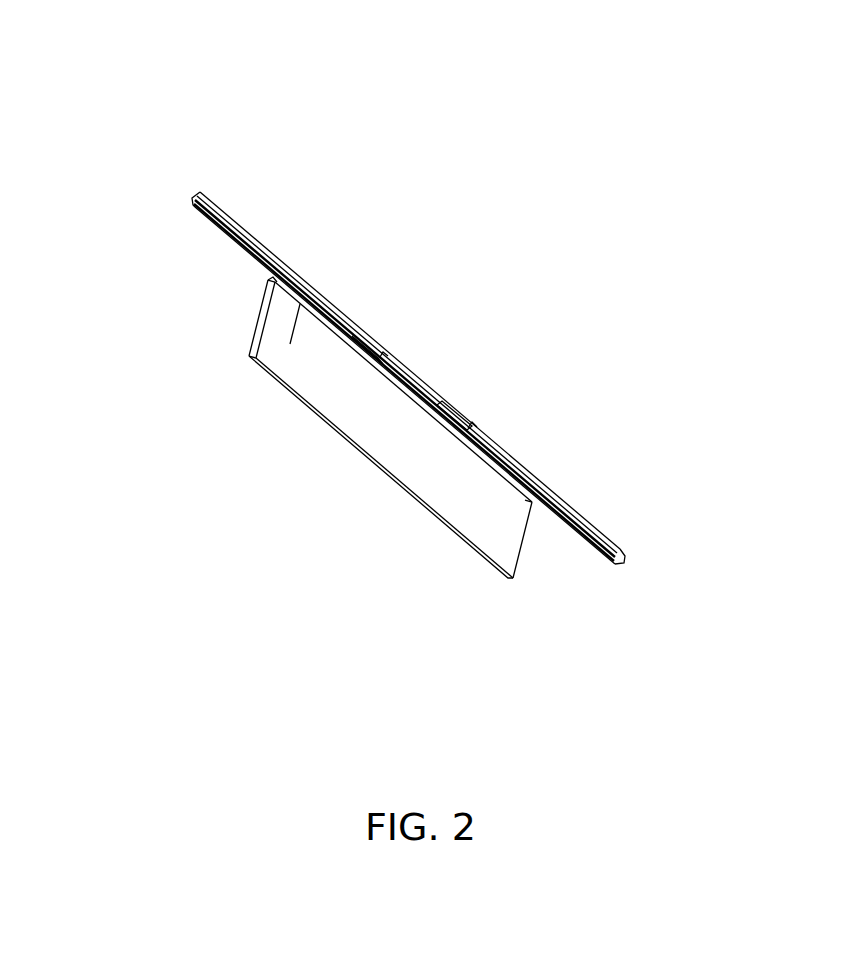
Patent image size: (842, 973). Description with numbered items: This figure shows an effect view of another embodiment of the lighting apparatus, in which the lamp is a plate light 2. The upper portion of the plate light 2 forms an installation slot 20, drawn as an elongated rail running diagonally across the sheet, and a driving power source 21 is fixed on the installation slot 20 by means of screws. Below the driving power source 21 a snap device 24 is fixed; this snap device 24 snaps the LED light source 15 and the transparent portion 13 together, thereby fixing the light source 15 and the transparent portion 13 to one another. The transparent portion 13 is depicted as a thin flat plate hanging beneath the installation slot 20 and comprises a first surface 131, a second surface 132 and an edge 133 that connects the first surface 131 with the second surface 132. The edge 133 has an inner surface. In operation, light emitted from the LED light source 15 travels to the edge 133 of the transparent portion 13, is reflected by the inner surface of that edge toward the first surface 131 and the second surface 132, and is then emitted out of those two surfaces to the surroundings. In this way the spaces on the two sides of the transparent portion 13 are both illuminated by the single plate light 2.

The plate light 2 is at (131, 94).
The transparent portion 13 is at (331, 368).
The first surface 131 is at (500, 483).
The second surface 132 is at (358, 447).
The edge 133 is at (441, 516).
The LED light source 15 is at (507, 543).
The installation slot 20 is at (557, 497).
The driving power source 21 is at (412, 378).
The snap device 24 is at (480, 433).